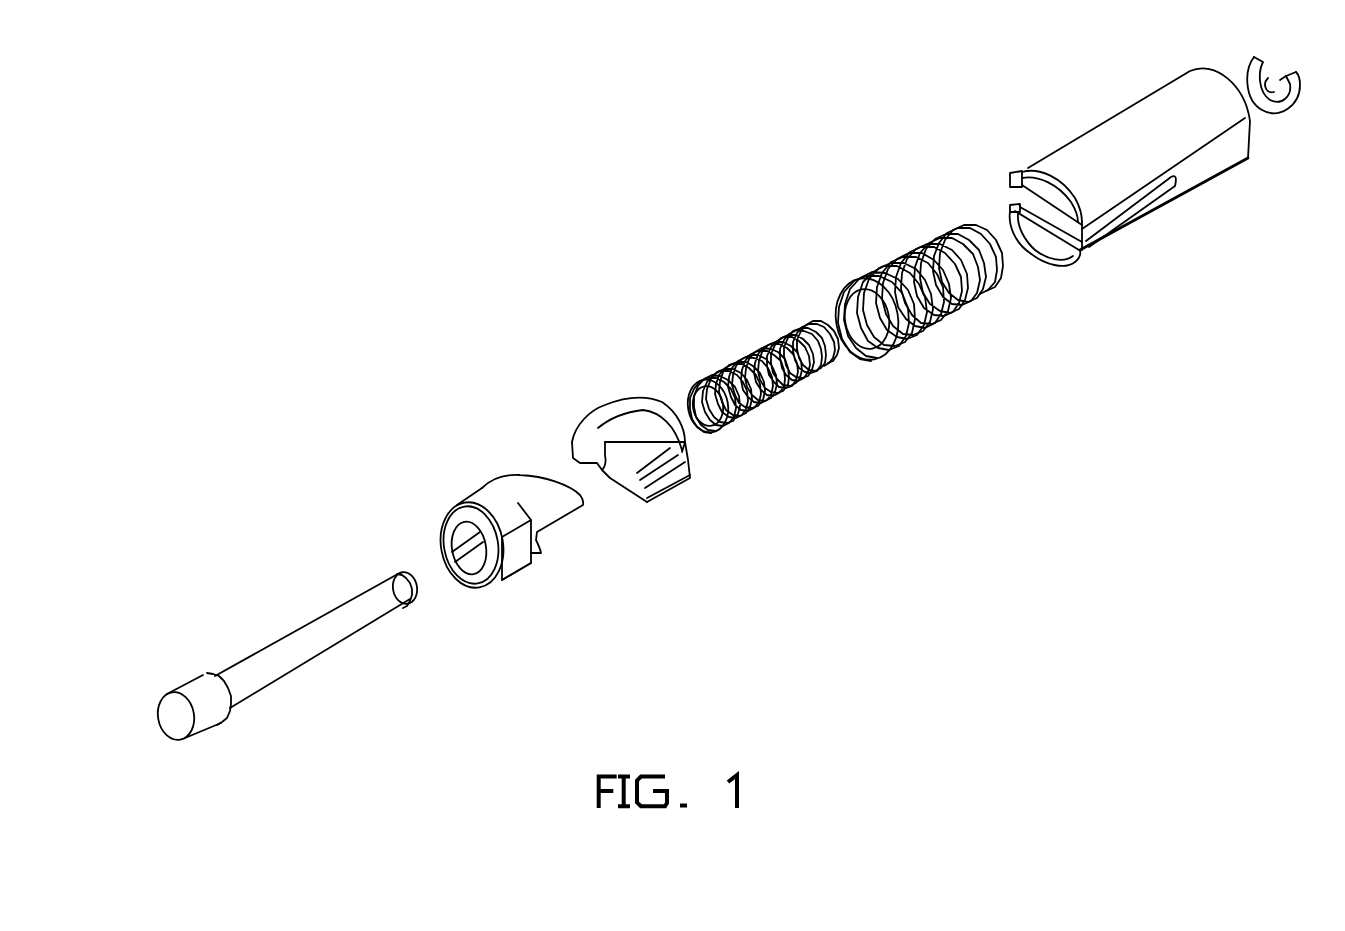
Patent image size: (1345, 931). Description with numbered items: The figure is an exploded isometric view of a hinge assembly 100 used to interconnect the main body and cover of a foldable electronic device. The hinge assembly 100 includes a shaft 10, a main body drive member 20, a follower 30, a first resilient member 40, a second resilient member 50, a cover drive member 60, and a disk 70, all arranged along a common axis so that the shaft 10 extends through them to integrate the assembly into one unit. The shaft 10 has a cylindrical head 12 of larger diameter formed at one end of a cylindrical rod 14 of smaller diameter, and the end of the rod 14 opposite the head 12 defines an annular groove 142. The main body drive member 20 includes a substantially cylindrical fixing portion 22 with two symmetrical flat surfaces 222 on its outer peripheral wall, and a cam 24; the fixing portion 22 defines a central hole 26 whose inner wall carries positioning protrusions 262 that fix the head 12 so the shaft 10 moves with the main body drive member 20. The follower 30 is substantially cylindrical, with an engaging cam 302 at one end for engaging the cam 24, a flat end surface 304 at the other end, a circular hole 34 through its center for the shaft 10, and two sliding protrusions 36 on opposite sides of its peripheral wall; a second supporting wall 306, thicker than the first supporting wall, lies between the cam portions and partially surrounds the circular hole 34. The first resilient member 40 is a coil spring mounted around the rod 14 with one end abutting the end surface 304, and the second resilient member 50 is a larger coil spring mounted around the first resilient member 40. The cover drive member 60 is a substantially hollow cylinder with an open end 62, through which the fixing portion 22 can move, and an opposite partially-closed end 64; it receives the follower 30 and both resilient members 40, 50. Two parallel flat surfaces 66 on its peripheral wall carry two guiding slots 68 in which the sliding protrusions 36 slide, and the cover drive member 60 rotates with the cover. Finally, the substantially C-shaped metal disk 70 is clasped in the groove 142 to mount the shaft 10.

The hinge assembly 100 is at (628, 72).
The shaft 10 is at (258, 640).
The cylindrical head 12 is at (198, 693).
The cylindrical rod 14 is at (332, 623).
The annular groove 142 is at (397, 577).
The main body drive member 20 is at (440, 492).
The fixing portion 22 is at (492, 503).
The cam 24 is at (540, 485).
The central hole 26 is at (455, 540).
The flat surfaces 222 is at (515, 565).
The positioning protrusions 262 is at (460, 572).
The follower 30 is at (613, 393).
The engaging cam 302 is at (603, 430).
The flat end surface 304 is at (665, 395).
The second supporting wall 306 is at (650, 432).
The circular hole 34 is at (608, 483).
The sliding protrusions 36 is at (667, 472).
The first resilient member 40 is at (780, 333).
The second resilient member 50 is at (910, 247).
The cover drive member 60 is at (1063, 120).
The open end 62 is at (1053, 240).
The partially-closed end 64 is at (1223, 73).
The flat surfaces 66 is at (1203, 165).
The guiding slots 68 is at (1122, 208).
The disk 70 is at (1272, 60).